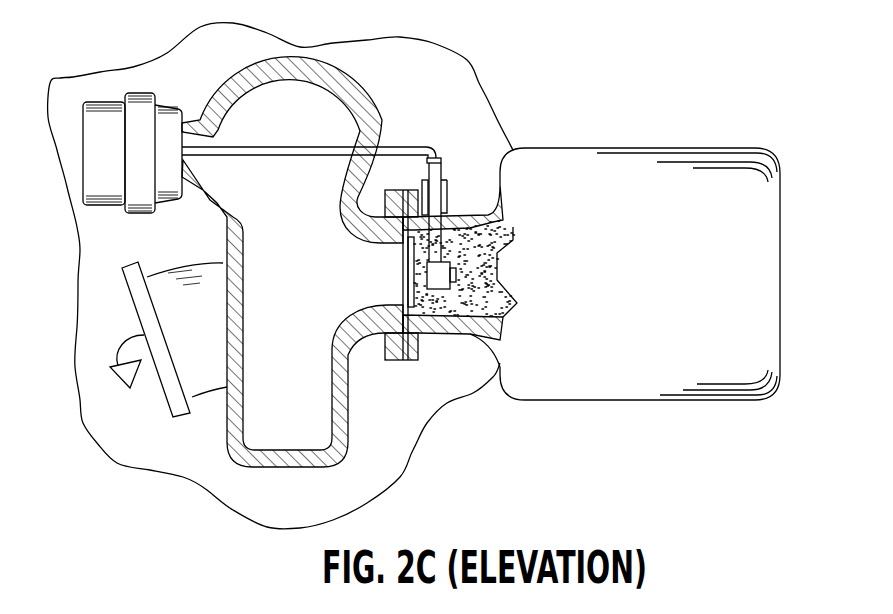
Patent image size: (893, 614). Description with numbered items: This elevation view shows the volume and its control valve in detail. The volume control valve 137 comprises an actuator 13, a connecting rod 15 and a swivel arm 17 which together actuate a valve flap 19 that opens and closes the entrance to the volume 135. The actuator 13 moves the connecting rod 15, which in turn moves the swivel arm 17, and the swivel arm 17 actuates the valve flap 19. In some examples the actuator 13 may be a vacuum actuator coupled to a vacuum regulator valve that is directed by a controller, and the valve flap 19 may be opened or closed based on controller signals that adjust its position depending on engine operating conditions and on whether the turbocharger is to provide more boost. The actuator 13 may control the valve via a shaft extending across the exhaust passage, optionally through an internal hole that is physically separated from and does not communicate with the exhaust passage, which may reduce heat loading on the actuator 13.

The actuator 13 is at (83, 178).
The connecting rod 15 is at (410, 143).
The swivel arm 17 is at (443, 213).
The valve flap 19 is at (420, 317).
The volume 135 is at (666, 147).
The volume control valve 137 is at (178, 62).